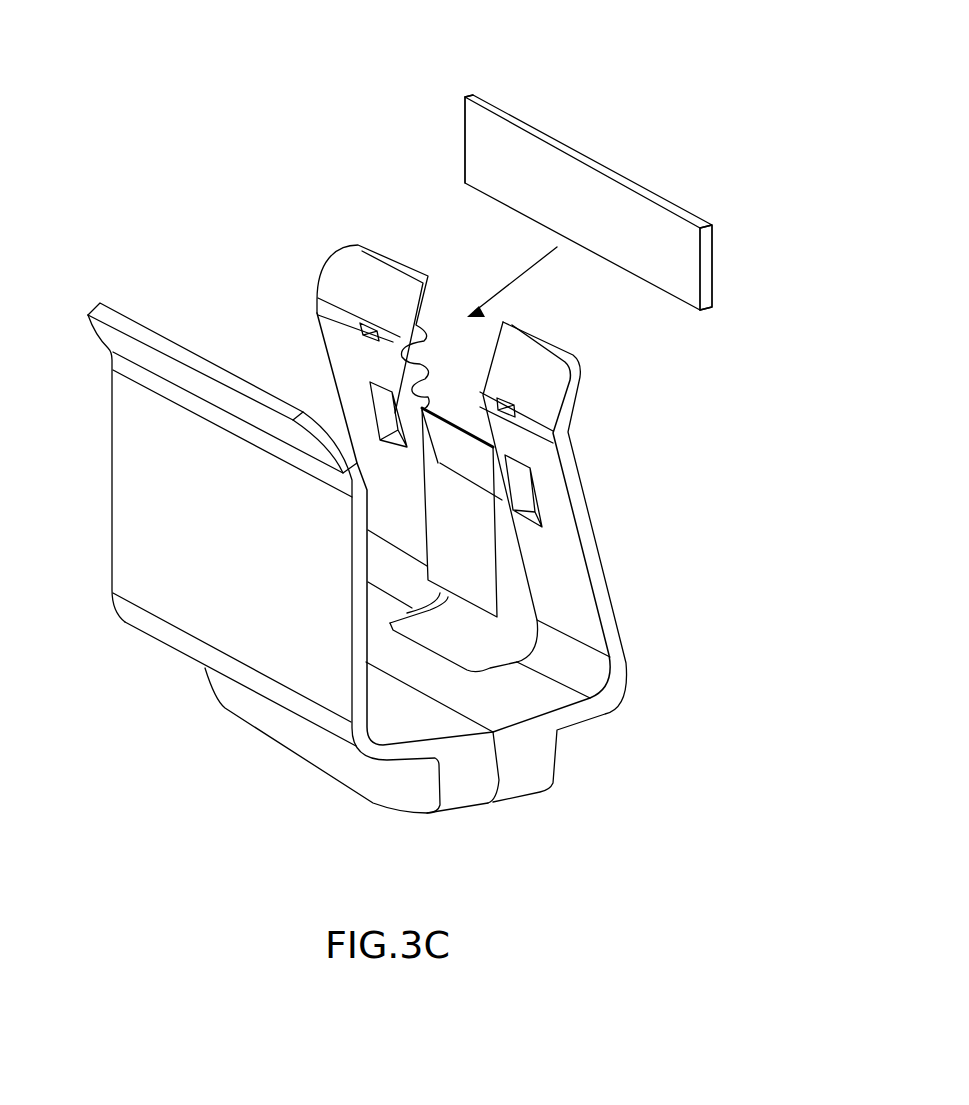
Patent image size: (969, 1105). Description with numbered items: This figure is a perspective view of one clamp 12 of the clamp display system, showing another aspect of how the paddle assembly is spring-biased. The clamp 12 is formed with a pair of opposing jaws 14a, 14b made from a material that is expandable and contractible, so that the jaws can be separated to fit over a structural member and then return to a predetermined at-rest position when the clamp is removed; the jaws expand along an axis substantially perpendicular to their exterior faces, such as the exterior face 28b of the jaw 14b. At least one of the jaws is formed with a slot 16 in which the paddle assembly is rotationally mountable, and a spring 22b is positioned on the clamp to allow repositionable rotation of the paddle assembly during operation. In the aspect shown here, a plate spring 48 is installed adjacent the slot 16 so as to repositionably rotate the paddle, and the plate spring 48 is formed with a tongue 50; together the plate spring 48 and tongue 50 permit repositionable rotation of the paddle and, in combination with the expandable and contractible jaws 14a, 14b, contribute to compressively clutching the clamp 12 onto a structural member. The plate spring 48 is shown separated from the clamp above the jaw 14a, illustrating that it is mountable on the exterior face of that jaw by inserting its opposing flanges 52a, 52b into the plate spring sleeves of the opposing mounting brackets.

The clamp 12 is at (142, 252).
The opposing jaw 14a is at (610, 702).
The opposing jaw 14b is at (122, 482).
The slot 16 is at (447, 302).
The spring 22b is at (463, 420).
The exterior face 28b is at (135, 617).
The plate spring 48 is at (642, 138).
The tongue 50 is at (478, 590).
The opposing flange 52a is at (716, 278).
The opposing flange 52b is at (463, 136).